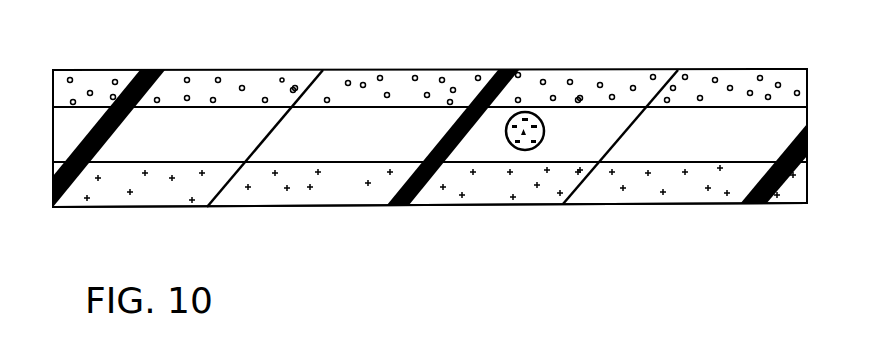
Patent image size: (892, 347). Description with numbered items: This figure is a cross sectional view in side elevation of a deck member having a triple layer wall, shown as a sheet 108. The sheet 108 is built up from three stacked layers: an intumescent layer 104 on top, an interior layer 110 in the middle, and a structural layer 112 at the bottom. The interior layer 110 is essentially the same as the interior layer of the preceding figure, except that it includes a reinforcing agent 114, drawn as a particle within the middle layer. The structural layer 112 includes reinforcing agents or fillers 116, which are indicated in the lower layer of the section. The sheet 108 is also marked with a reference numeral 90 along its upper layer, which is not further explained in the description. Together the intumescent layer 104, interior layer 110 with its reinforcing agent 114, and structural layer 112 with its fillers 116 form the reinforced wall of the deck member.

The top layer 90 is at (282, 78).
The intumescent layer 104 is at (398, 85).
The sheet 108 is at (573, 46).
The interior layer 110 is at (723, 142).
The structural layer 112 is at (600, 187).
The reinforcing agent 114 is at (525, 152).
The reinforcing agents or fillers 116 is at (334, 192).